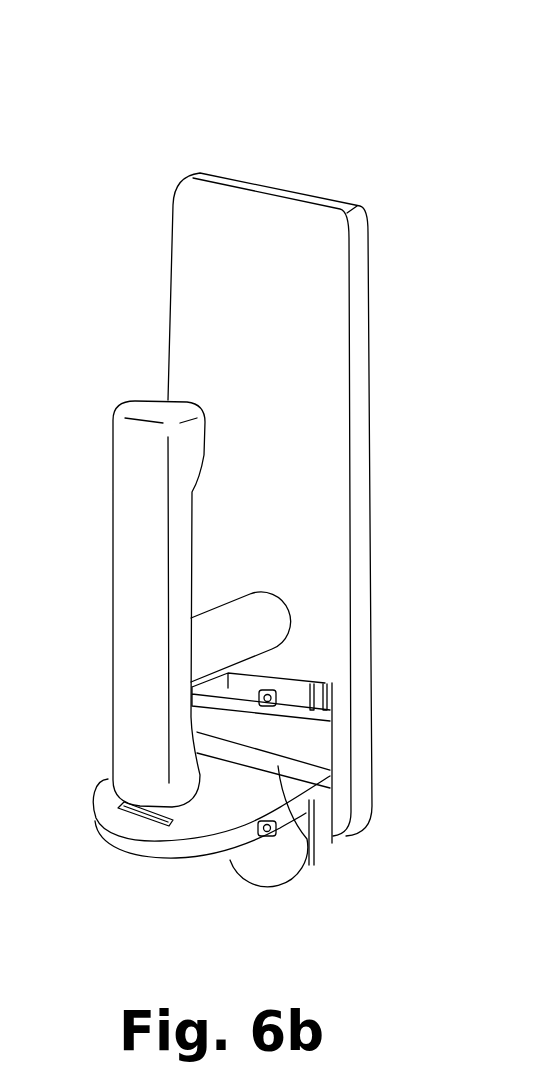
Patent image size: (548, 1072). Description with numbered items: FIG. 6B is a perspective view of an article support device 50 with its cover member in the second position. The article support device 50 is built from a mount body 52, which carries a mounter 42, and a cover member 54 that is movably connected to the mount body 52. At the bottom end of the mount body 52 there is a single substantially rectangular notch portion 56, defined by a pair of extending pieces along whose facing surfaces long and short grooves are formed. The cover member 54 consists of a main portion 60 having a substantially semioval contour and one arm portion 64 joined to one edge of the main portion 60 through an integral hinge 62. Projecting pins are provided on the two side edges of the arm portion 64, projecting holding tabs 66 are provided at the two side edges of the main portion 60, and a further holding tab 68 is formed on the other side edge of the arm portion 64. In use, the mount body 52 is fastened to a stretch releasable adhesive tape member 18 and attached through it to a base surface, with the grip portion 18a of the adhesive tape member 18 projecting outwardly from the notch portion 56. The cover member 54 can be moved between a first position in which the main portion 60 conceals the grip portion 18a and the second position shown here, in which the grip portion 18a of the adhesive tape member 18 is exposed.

The article support device 50 is at (273, 136).
The mount body 52 is at (208, 248).
The mounter 42 is at (138, 478).
The notch portion 56 is at (327, 687).
The holding tab 68 is at (258, 699).
The arm portion 64 is at (283, 731).
The main portion 60 is at (178, 835).
The cover member 54 is at (110, 838).
The holding tabs 66 is at (266, 833).
The grip portion 18a is at (270, 865).
The integral hinge 62 is at (320, 846).
The adhesive tape member 18 is at (322, 870).